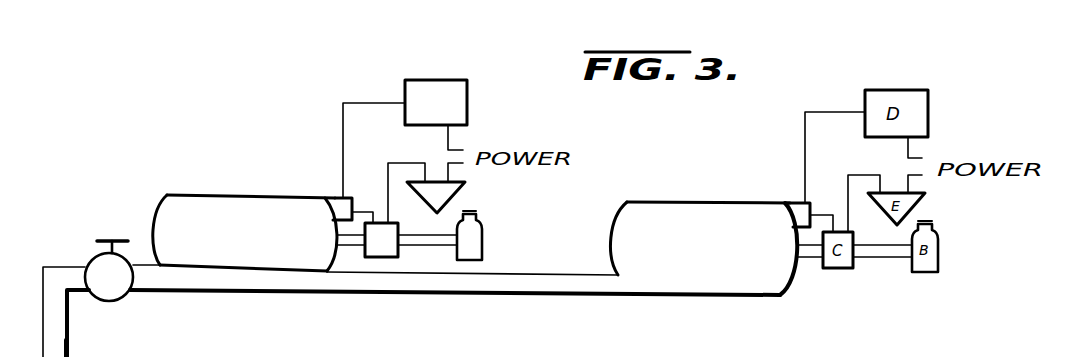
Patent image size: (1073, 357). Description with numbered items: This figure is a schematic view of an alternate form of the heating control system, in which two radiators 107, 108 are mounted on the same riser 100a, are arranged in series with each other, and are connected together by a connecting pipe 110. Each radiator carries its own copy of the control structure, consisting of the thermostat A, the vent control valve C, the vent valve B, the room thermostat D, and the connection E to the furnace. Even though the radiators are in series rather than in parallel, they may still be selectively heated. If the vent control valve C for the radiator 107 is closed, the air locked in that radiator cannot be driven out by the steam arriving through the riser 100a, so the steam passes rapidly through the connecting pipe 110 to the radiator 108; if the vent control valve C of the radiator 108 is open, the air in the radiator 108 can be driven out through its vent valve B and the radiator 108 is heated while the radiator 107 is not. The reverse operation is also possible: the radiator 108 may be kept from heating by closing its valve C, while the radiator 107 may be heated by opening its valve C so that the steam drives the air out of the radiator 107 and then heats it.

The riser 100a is at (67, 355).
The radiator 107 is at (257, 255).
The radiator 108 is at (717, 267).
The connecting pipe 110 is at (502, 295).
The thermostat A is at (343, 208).
The vent valve B is at (469, 235).
The vent control valve C is at (381, 240).
The room thermostat D is at (436, 102).
The connection to the furnace E is at (436, 197).